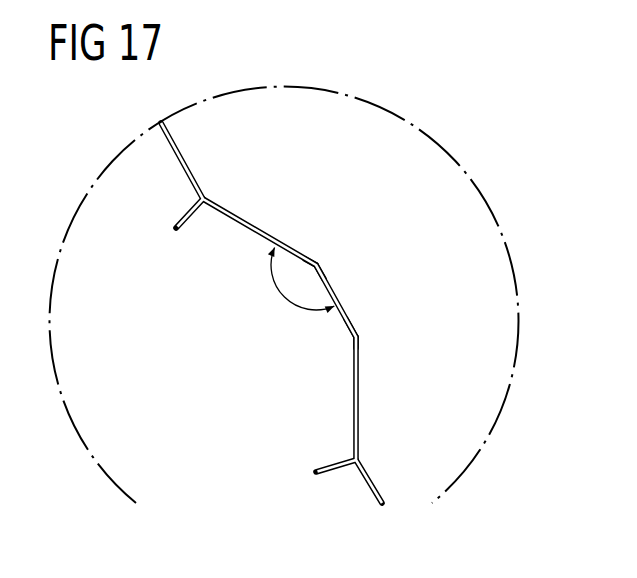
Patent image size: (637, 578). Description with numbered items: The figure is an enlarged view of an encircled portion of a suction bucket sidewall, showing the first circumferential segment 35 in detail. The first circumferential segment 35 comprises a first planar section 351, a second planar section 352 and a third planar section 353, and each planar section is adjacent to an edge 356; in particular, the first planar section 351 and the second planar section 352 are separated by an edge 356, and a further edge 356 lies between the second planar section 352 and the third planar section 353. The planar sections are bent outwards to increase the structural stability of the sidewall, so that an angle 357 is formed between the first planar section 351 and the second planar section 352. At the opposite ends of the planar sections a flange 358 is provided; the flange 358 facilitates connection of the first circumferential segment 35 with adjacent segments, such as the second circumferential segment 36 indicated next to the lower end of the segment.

The first circumferential segment 35 is at (330, 313).
The second circumferential segment 36 is at (399, 487).
The first planar section 351 is at (246, 215).
The second planar section 352 is at (334, 305).
The third planar section 353 is at (360, 387).
The edge 356 is at (311, 258).
The angle 357 is at (283, 297).
The flange 358 is at (188, 229).